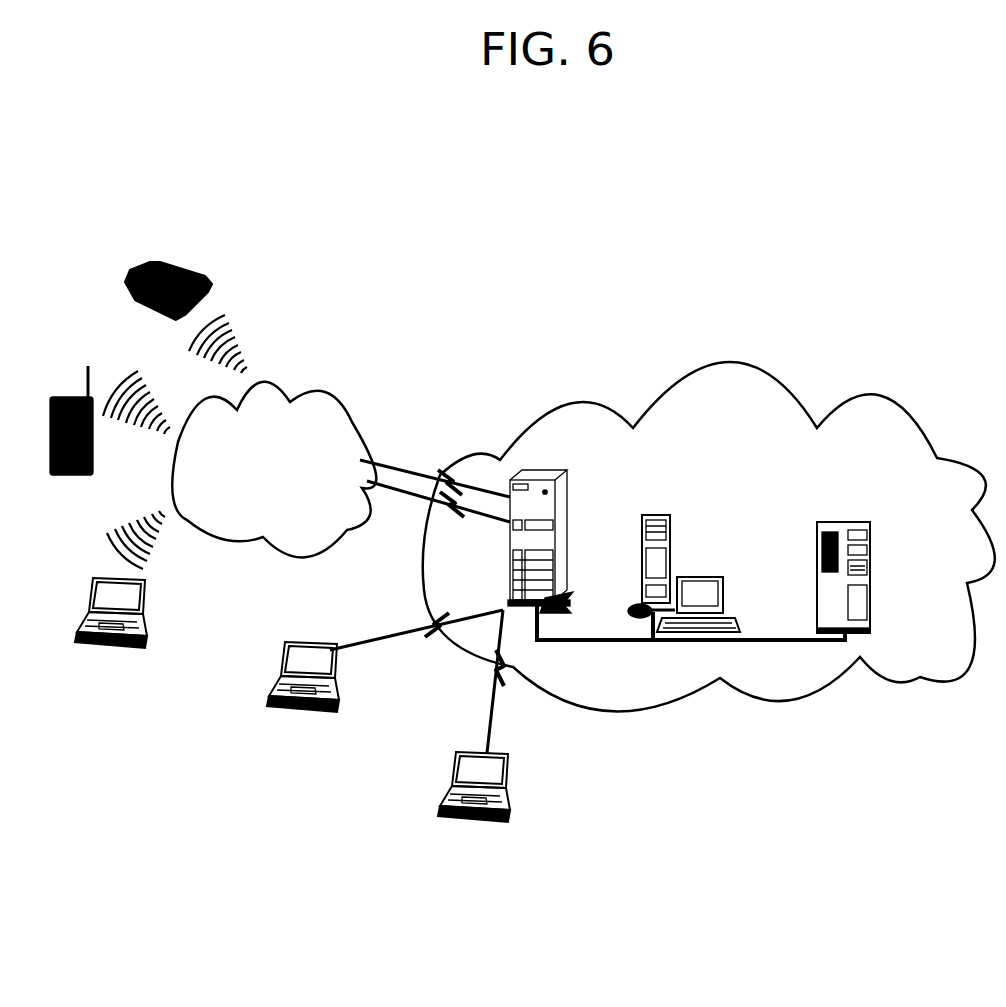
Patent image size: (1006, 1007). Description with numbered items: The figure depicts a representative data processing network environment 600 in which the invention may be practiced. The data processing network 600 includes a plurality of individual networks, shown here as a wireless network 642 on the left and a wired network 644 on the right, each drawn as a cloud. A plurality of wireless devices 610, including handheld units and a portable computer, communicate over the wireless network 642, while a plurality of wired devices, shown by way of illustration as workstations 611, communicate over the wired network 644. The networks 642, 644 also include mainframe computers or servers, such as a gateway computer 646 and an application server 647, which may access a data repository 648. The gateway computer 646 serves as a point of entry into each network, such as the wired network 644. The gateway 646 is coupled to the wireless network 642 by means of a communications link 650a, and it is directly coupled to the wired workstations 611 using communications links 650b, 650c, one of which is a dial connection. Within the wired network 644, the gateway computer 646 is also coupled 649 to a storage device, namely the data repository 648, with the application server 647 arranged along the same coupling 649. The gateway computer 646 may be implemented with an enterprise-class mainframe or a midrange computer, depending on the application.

The data processing network environment 600 is at (561, 205).
The wireless device 610 is at (147, 487).
The workstation 611 is at (383, 750).
The wireless network 642 is at (274, 465).
The wired network 644 is at (709, 534).
The gateway computer 646 is at (562, 541).
The application server 647 is at (684, 560).
The data repository 648 is at (870, 577).
The coupling 649 is at (691, 639).
The communications link 650a is at (435, 455).
The communications link 650b is at (416, 625).
The communications link 650c is at (462, 681).